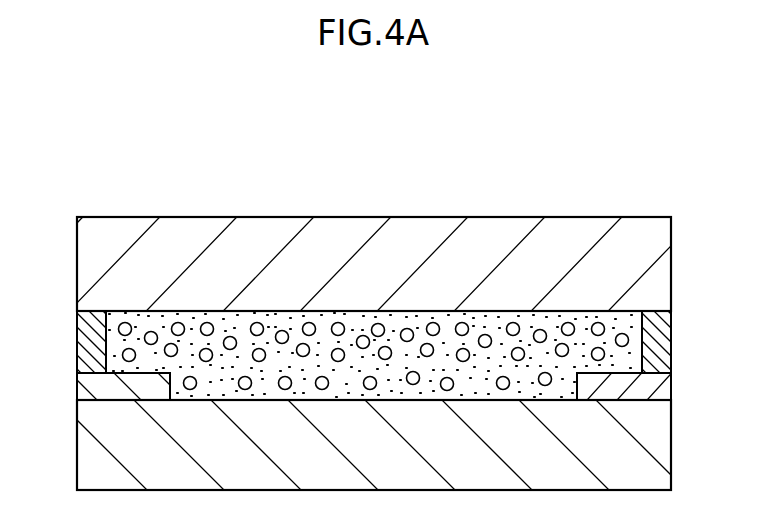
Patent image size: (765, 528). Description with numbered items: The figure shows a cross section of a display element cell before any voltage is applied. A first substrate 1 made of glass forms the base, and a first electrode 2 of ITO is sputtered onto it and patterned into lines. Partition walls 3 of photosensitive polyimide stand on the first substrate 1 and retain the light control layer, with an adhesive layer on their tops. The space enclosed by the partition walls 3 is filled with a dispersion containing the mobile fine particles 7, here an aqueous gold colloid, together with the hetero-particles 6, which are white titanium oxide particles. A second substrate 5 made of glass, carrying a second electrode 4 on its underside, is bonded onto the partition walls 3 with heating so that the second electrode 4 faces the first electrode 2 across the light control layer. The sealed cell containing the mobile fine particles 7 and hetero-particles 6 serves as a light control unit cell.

The first substrate 1 is at (665, 458).
The first electrode 2 is at (671, 388).
The partition wall 3 is at (78, 337).
The second electrode 4 is at (78, 395).
The second substrate 5 is at (665, 228).
The hetero-particles 6 is at (517, 323).
The mobile fine particles 7 is at (584, 323).